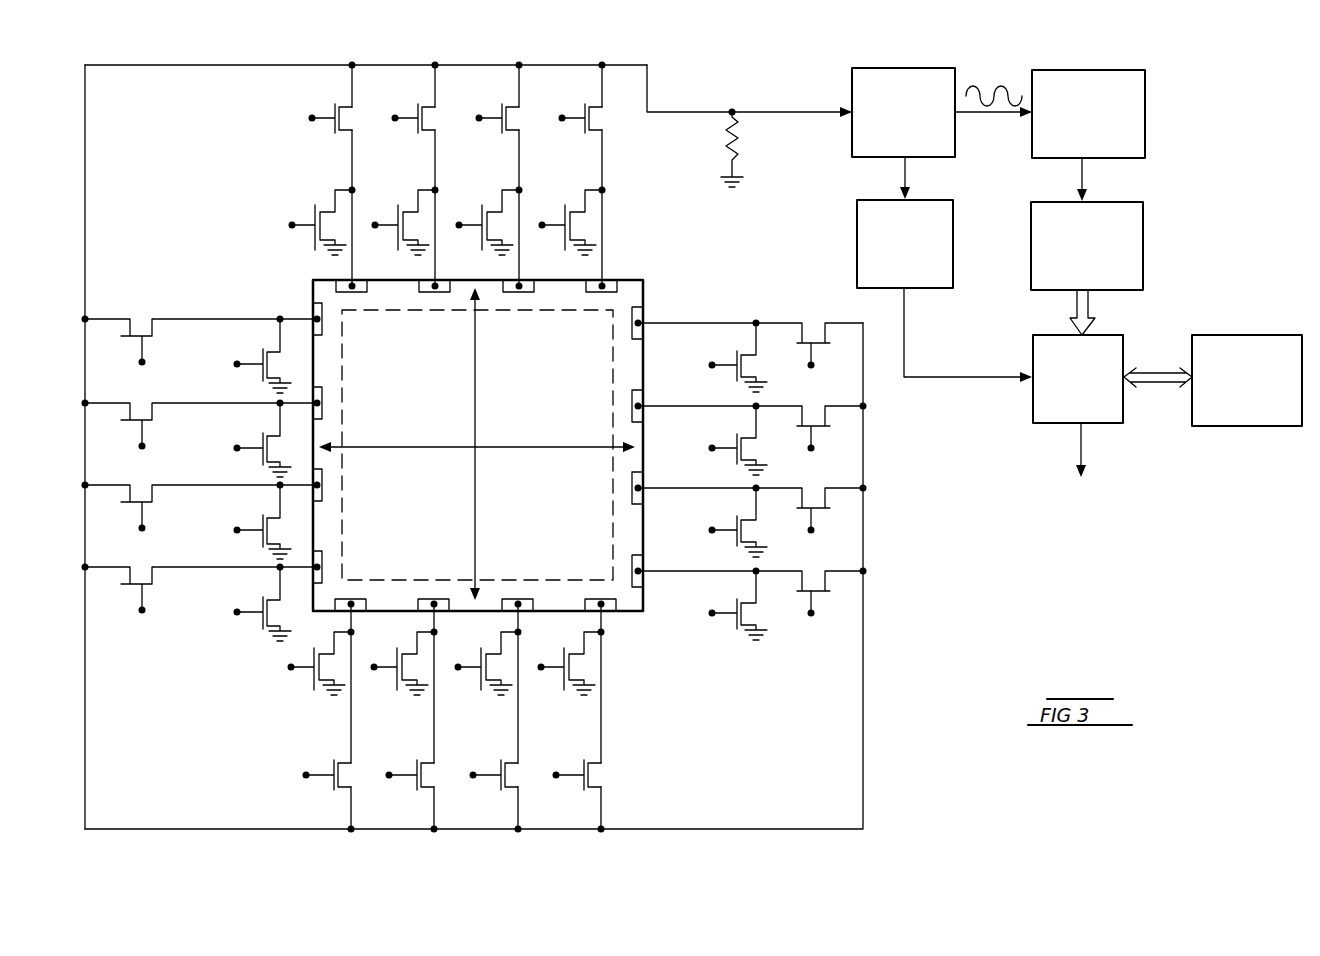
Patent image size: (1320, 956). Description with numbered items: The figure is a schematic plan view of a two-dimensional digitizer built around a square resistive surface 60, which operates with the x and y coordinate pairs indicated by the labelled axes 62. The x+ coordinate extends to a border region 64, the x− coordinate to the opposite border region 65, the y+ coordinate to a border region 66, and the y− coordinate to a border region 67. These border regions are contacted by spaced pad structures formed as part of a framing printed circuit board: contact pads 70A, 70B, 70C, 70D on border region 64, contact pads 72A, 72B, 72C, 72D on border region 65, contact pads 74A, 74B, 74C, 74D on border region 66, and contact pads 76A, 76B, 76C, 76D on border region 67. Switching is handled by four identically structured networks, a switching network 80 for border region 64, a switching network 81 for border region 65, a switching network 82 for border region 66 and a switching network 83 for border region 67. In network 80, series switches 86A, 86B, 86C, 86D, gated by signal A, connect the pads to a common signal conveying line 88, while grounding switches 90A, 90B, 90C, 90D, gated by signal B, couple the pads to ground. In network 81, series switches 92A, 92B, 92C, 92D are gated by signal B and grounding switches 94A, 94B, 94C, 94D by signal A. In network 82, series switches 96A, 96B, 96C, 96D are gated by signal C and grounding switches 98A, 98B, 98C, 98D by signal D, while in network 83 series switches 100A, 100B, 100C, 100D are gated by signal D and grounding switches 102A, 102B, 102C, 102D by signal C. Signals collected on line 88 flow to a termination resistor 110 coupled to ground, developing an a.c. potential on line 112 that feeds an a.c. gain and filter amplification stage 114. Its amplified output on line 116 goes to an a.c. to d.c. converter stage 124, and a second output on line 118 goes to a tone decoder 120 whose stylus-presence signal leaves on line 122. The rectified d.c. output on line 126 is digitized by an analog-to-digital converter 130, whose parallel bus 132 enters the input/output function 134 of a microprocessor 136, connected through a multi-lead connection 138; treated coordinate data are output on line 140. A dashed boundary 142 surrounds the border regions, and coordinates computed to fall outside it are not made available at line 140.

The resistive surface 60 is at (421, 480).
The labelled axes 62 is at (480, 453).
The border region 64 is at (645, 292).
The border region 65 is at (312, 302).
The border region 66 is at (332, 283).
The border region 67 is at (624, 616).
The contact pad 70A is at (632, 340).
The contact pad 70B is at (632, 398).
The contact pad 70C is at (632, 498).
The contact pad 70D is at (632, 562).
The contact pad 72A is at (322, 337).
The contact pad 72B is at (322, 398).
The contact pad 72C is at (322, 498).
The contact pad 72D is at (322, 560).
The contact pad 74A is at (359, 294).
The contact pad 74B is at (433, 294).
The contact pad 74C is at (518, 294).
The contact pad 74D is at (605, 294).
The contact pad 76A is at (352, 597).
The contact pad 76B is at (443, 575).
The contact pad 76C is at (518, 597).
The contact pad 76D is at (601, 597).
The switching network 80 is at (745, 311).
The switching network 81 is at (166, 305).
The switching network 82 is at (270, 138).
The switching network 83 is at (622, 741).
The series switch 86A is at (803, 336).
The series switch 86B is at (803, 419).
The series switch 86C is at (803, 501).
The series switch 86D is at (803, 584).
The common signal conveying line 88 is at (85, 210).
The grounding switch 90A is at (748, 355).
The grounding switch 90B is at (748, 438).
The grounding switch 90C is at (748, 520).
The grounding switch 90D is at (748, 603).
The series switch 92A is at (152, 333).
The series switch 92B is at (152, 417).
The series switch 92C is at (152, 499).
The series switch 92D is at (152, 581).
The grounding switch 94A is at (280, 352).
The grounding switch 94B is at (280, 436).
The grounding switch 94C is at (280, 518).
The grounding switch 94D is at (280, 600).
The series switch 96A is at (349, 103).
The series switch 96B is at (433, 103).
The series switch 96C is at (517, 103).
The series switch 96D is at (600, 103).
The grounding switch 98A is at (330, 210).
The grounding switch 98B is at (414, 210).
The grounding switch 98C is at (499, 210).
The grounding switch 98D is at (582, 210).
The series switch 100A is at (339, 765).
The series switch 100B is at (422, 765).
The series switch 100C is at (506, 765).
The series switch 100D is at (589, 765).
The grounding switch 102A is at (322, 687).
The grounding switch 102B is at (405, 687).
The grounding switch 102C is at (489, 687).
The grounding switch 102D is at (573, 687).
The termination resistor 110 is at (739, 158).
The line 112 is at (790, 110).
The a.c. gain and filter amplification stage 114 is at (852, 82).
The line 116 is at (975, 115).
The line 118 is at (905, 170).
The tone decoder 120 is at (857, 218).
The line 122 is at (904, 330).
The a.c. to d.c. converter stage 124 is at (1145, 85).
The line 126 is at (1087, 170).
The analog-to-digital converter 130 is at (1143, 240).
The bus 132 is at (1076, 305).
The input/output function 134 is at (1115, 335).
The microprocessor 136 is at (1230, 335).
The multi-lead connection 138 is at (1160, 386).
The line 140 is at (1085, 445).
The dashed boundary 142 is at (343, 522).